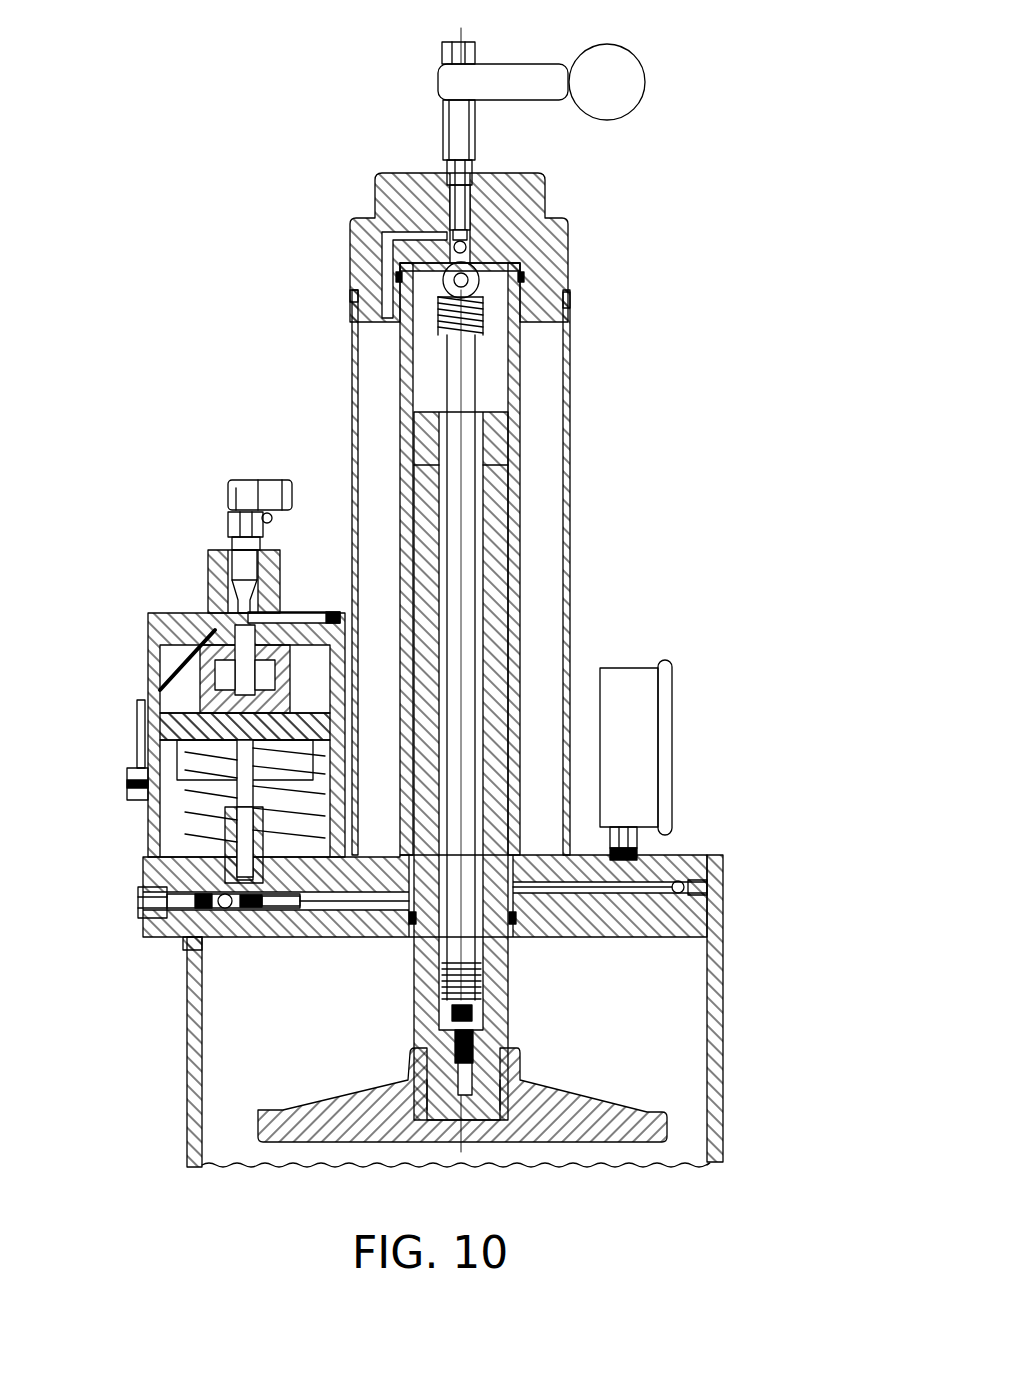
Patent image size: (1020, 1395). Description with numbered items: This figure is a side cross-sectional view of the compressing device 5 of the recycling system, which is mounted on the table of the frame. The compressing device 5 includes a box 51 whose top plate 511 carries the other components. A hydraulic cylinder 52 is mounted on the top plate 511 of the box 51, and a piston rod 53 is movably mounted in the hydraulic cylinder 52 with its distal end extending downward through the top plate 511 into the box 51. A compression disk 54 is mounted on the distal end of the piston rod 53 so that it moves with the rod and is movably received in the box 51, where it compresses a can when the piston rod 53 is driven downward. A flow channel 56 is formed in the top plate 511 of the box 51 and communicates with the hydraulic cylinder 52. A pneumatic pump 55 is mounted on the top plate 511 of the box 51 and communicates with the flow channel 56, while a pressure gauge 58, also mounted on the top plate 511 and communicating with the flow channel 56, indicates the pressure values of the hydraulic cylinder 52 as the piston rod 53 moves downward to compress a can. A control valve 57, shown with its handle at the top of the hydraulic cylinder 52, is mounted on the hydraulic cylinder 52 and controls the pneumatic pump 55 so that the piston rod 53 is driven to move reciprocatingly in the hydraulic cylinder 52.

The compressing device 5 is at (513, 561).
The box 51 is at (717, 1020).
The top plate 511 is at (680, 915).
The hydraulic cylinder 52 is at (570, 470).
The piston rod 53 is at (497, 978).
The compression disk 54 is at (583, 1130).
The pneumatic pump 55 is at (140, 590).
The flow channel 56 is at (655, 887).
The control valve 57 is at (524, 78).
The pressure gauge 58 is at (620, 705).